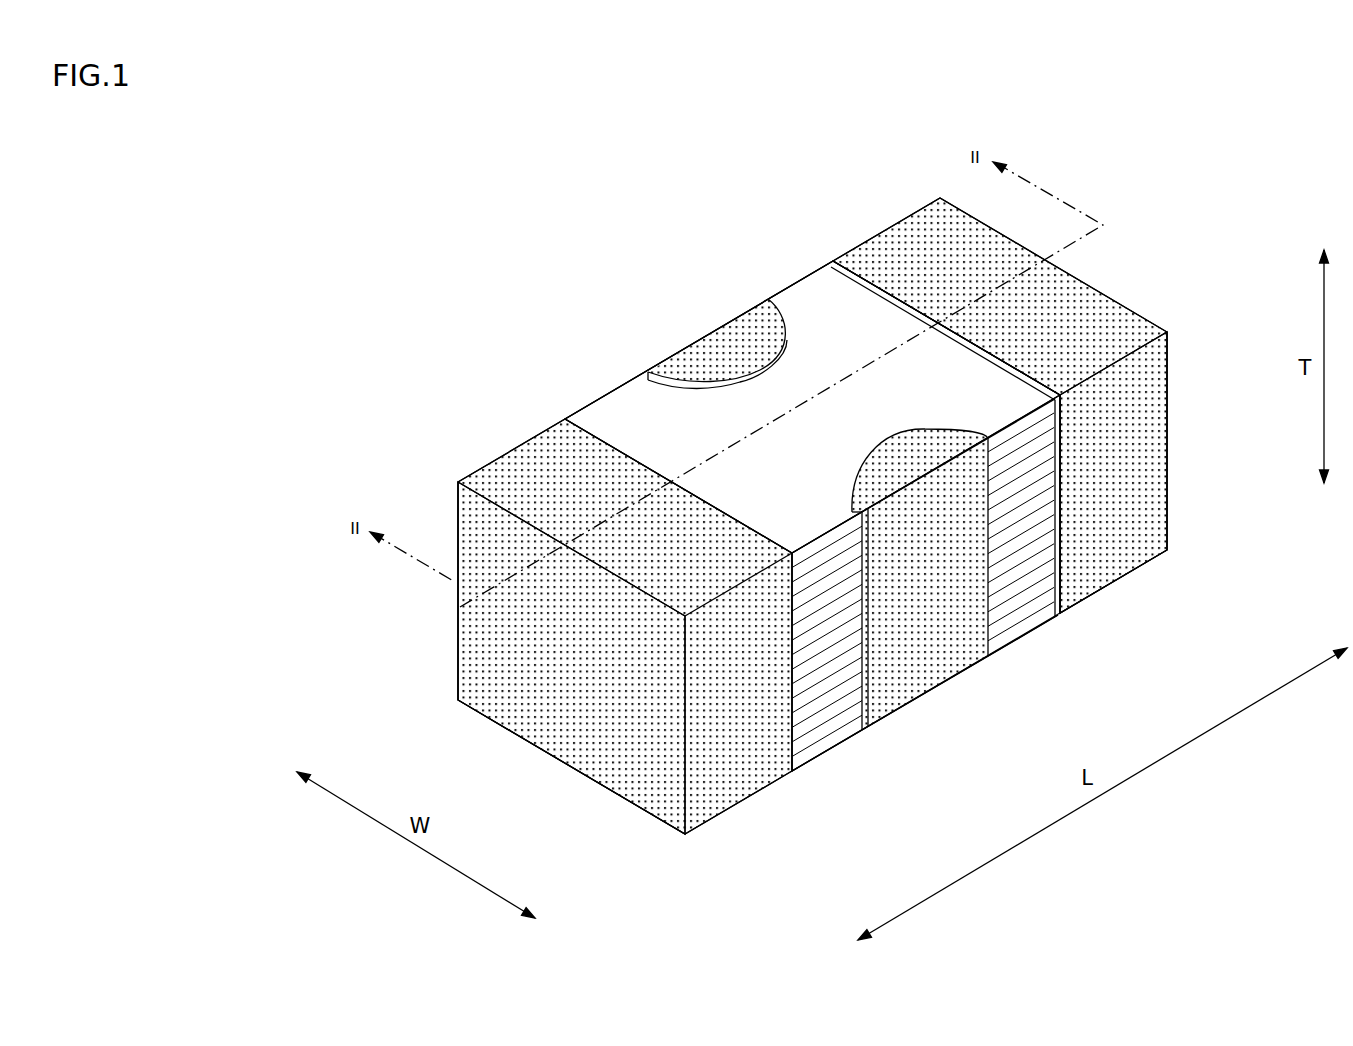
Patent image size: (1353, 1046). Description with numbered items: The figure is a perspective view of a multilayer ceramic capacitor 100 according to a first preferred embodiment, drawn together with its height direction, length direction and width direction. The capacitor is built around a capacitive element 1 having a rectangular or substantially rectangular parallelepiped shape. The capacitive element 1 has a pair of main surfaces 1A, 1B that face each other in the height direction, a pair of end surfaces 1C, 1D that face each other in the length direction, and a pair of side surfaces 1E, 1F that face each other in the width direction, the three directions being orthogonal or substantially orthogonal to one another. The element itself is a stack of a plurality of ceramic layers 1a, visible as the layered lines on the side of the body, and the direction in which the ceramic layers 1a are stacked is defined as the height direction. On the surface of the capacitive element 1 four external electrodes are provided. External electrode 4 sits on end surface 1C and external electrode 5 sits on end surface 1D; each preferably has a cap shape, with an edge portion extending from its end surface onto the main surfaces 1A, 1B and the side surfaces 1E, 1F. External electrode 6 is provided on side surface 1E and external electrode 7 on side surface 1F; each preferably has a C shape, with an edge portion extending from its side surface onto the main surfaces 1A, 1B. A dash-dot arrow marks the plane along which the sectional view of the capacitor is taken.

The multilayer ceramic capacitor 100 is at (188, 144).
The capacitive element 1 is at (799, 507).
The main surface 1A is at (845, 758).
The main surface 1B is at (670, 428).
The end surface 1C is at (553, 637).
The end surface 1D is at (1132, 272).
The side surface 1E is at (942, 600).
The side surface 1F is at (677, 327).
The ceramic layer 1a is at (1033, 575).
The external electrode 4 is at (570, 660).
The external electrode 5 is at (958, 277).
The external electrode 6 is at (943, 567).
The external electrode 7 is at (735, 345).